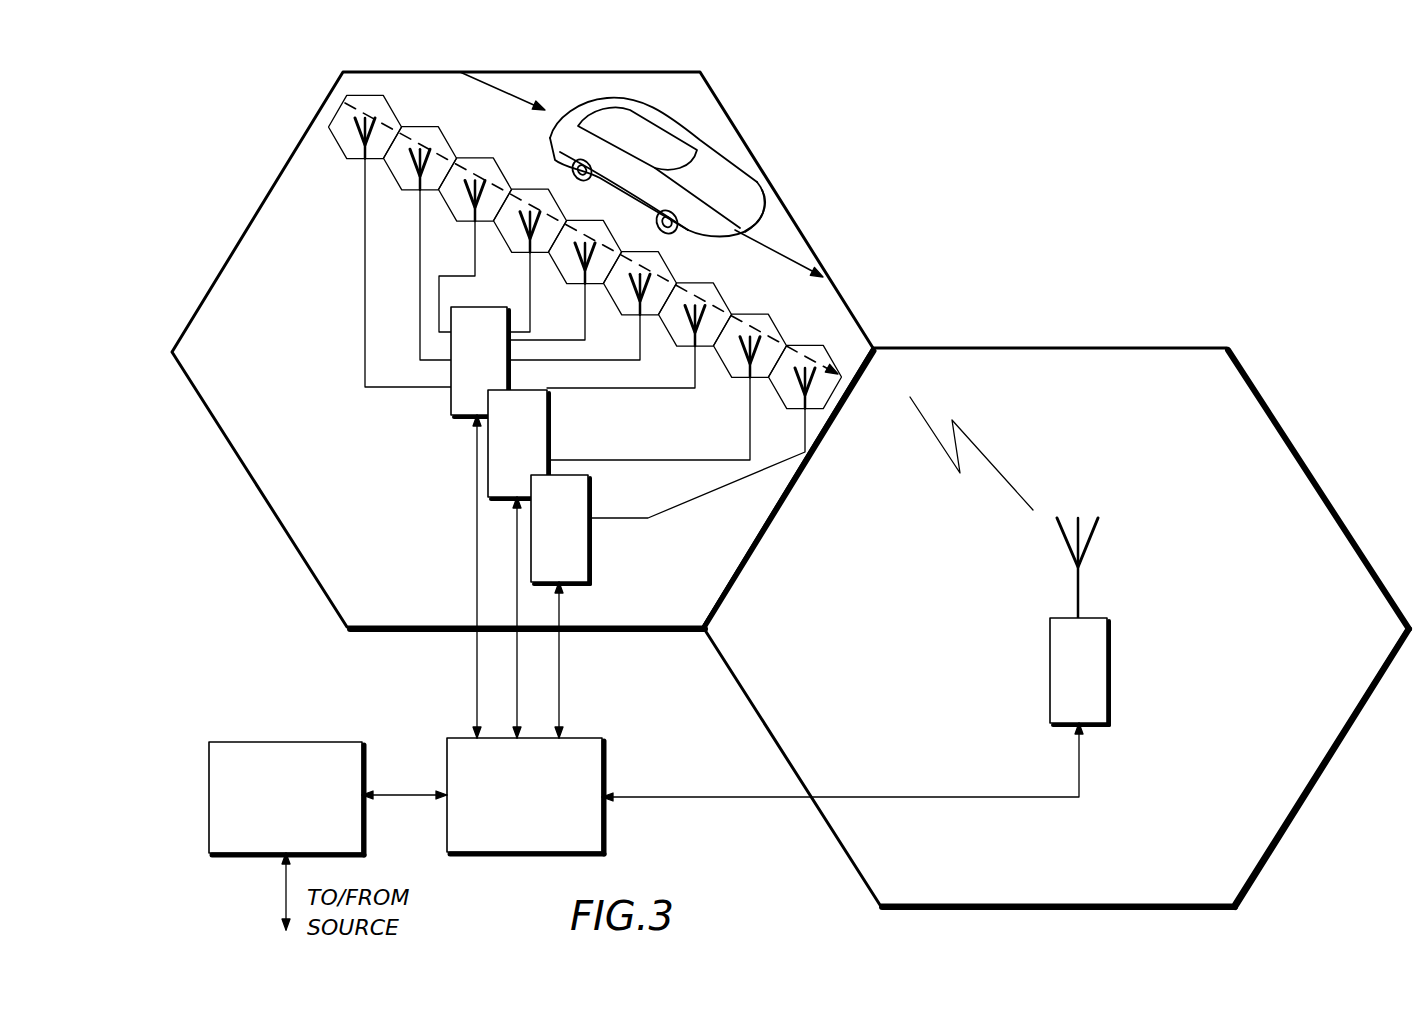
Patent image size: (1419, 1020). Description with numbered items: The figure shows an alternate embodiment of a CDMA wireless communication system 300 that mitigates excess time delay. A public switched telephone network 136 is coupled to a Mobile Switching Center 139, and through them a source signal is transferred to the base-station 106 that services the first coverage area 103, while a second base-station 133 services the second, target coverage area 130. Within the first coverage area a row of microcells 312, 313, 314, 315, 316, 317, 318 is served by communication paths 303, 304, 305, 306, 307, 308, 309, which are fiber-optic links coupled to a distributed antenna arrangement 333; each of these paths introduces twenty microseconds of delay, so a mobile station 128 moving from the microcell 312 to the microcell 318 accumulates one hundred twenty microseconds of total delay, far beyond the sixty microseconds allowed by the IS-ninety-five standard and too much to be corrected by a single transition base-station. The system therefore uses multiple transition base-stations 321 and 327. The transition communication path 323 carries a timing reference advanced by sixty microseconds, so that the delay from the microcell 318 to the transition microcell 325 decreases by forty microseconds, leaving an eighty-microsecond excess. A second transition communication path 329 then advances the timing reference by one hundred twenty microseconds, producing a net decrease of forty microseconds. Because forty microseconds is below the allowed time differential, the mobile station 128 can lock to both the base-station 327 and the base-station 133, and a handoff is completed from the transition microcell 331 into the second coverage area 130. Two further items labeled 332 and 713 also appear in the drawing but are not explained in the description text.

The first coverage area 103 is at (285, 180).
The base-station 106 is at (451, 415).
The mobile station 128 is at (722, 155).
The second coverage area 130 is at (993, 348).
The base-station 133 is at (1110, 636).
The public switched telephone network 136 is at (365, 750).
The Mobile Switching Center 139 is at (606, 765).
The wireless communication system 300 is at (1240, 221).
The communication path 303 is at (363, 303).
The communication path 304 is at (422, 252).
The communication path 305 is at (478, 275).
The communication path 306 is at (530, 306).
The communication path 307 is at (584, 336).
The communication path 308 is at (622, 362).
The communication path 309 is at (645, 390).
The microcell 312 is at (356, 163).
The microcell 313 is at (413, 153).
The microcell 314 is at (480, 156).
The microcell 315 is at (504, 186).
The microcell 316 is at (608, 249).
The microcell 317 is at (665, 255).
The microcell 318 is at (720, 284).
The transition base-station 321 is at (488, 458).
The transition communication path 323 is at (688, 462).
The transition microcell 325 is at (758, 316).
The transition base-station 327 is at (592, 552).
The second transition communication path 329 is at (737, 488).
The transition microcell 331 is at (800, 348).
The path of mobile unit 332 is at (347, 123).
The distributed antenna arrangement 333 is at (357, 100).
The microcell 713 is at (420, 125).